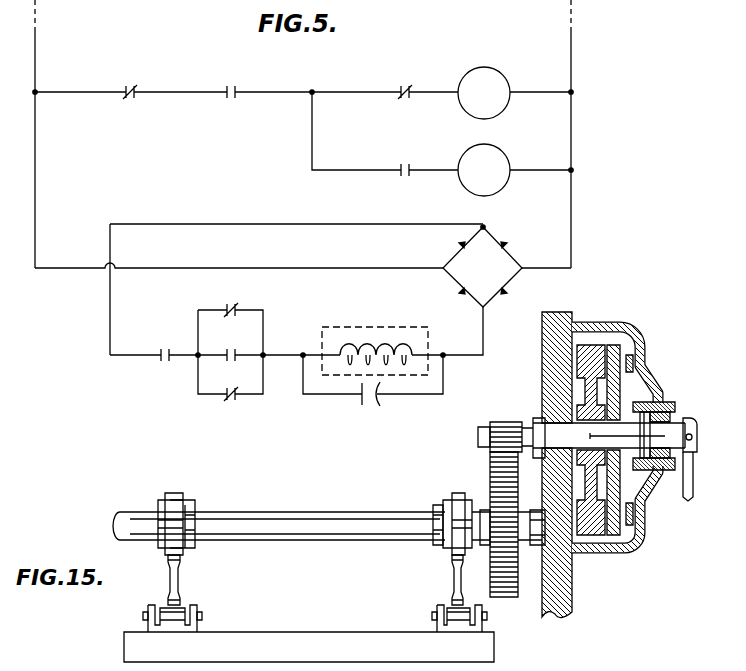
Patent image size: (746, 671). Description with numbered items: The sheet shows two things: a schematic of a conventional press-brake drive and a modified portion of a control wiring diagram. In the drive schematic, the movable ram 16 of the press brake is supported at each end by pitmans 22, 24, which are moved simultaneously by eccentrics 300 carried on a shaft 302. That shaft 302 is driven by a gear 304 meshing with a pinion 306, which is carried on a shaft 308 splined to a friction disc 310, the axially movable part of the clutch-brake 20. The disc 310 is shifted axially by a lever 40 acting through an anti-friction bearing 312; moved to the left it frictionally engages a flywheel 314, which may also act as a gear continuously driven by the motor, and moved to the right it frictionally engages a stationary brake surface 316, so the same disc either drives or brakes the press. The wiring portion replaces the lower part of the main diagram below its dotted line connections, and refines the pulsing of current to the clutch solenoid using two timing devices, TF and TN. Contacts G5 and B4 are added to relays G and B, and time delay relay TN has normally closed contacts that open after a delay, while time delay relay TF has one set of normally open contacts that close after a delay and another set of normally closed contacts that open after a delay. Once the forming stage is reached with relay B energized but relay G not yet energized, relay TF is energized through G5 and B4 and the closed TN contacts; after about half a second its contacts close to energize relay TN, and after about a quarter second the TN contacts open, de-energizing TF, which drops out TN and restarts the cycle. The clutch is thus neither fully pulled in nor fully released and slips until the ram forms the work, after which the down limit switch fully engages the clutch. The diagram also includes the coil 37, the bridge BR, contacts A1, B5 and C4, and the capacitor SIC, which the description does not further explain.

In FIG. 15, the movable ram 16 is at (316, 660).
In FIG. 15, the clutch-brake 20 is at (656, 363).
In FIG. 15, the pitman 22 is at (182, 578).
In FIG. 15, the pitman 24 is at (452, 580).
In FIG. 5, the coil 37 is at (375, 351).
In FIG. 15, the lever 40 is at (684, 498).
In FIG. 15, the eccentrics 300 is at (186, 506).
In FIG. 15, the shaft 302 is at (286, 515).
In FIG. 15, the gear 304 is at (495, 478).
In FIG. 15, the pinion 306 is at (500, 426).
In FIG. 15, the shaft 308 is at (530, 430).
In FIG. 15, the friction disc 310 is at (645, 396).
In FIG. 15, the anti-friction bearing 312 is at (665, 404).
In FIG. 15, the flywheel 314 is at (588, 360).
In FIG. 15, the stationary brake surface 316 is at (640, 358).
In FIG. 5, the contact G5 is at (130, 83).
In FIG. 5, the contact B4 is at (230, 83).
In FIG. 5, the time delay relay TF is at (484, 93).
In FIG. 5, the time delay relay TN is at (399, 91).
In FIG. 5, the bridge rectifier BR is at (482, 267).
In FIG. 5, the contact A1 is at (162, 347).
In FIG. 5, the contact B5 is at (229, 301).
In FIG. 5, the contact C4 is at (229, 347).
In FIG. 5, the capacitor SIC is at (373, 391).